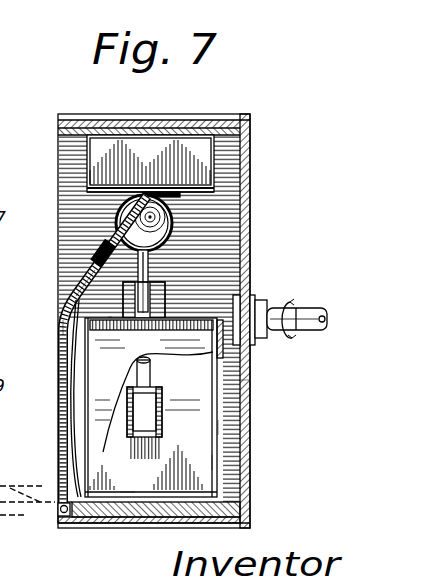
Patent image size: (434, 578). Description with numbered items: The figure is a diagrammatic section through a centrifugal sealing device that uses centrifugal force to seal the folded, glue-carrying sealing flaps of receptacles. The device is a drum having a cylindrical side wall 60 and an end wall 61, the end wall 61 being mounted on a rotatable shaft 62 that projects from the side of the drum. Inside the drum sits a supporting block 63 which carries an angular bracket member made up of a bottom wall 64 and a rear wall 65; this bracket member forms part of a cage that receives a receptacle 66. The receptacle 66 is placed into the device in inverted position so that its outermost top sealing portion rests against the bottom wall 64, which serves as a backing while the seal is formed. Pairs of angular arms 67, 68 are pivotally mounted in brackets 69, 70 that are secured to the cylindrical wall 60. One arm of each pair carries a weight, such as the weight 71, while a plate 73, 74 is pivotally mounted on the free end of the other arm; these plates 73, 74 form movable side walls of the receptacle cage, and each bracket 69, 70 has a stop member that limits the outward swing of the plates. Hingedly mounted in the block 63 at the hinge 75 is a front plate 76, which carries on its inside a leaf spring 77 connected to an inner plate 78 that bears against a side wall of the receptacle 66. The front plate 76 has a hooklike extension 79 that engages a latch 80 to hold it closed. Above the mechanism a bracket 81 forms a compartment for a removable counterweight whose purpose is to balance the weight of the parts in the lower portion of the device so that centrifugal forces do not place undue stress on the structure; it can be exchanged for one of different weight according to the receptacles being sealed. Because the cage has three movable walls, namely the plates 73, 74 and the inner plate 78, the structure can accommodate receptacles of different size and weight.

The cylindrical side wall 60 is at (58, 152).
The bracket 81 is at (200, 163).
The weight 71 is at (173, 222).
The angular arm 67 is at (150, 261).
The bracket 69 is at (160, 302).
The latch 80 is at (113, 232).
The hooklike extension 79 is at (88, 259).
The bracket 70 is at (31, 319).
The plate 73 is at (108, 318).
The hinge 75 is at (62, 509).
The inner plate 78 is at (72, 360).
The front plate 76 is at (63, 387).
The leaf spring 77 is at (82, 400).
The receptacle 66 is at (100, 417).
The angular arm 68 is at (153, 372).
The rotatable shaft 62 is at (312, 310).
The end wall 61 is at (252, 397).
The rear wall 65 is at (218, 427).
The plate 74 is at (197, 462).
The bottom wall 64 is at (127, 497).
The supporting block 63 is at (197, 512).